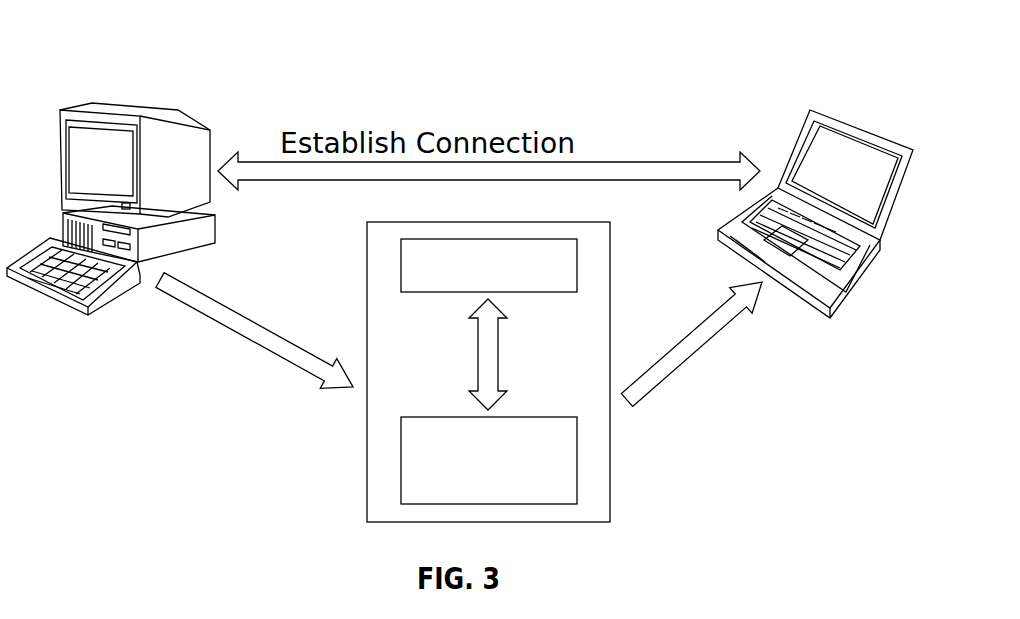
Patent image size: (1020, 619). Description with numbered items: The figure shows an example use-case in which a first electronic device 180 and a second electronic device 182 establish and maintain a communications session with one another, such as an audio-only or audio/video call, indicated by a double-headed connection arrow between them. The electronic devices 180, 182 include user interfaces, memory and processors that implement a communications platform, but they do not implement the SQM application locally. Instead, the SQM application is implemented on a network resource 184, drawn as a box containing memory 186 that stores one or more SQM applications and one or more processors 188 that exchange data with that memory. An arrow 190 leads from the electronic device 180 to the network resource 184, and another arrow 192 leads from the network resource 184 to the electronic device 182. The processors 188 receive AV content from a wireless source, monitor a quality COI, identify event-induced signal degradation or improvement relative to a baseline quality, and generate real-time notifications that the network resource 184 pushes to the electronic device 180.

The first electronic device 180 is at (137, 105).
The second electronic device 182 is at (862, 126).
The network resource 184 is at (610, 465).
The memory 186 is at (401, 461).
The processors 188 is at (401, 267).
The connection arrow from desktop computer 190 is at (244, 337).
The connection arrow to laptop computer 192 is at (693, 355).